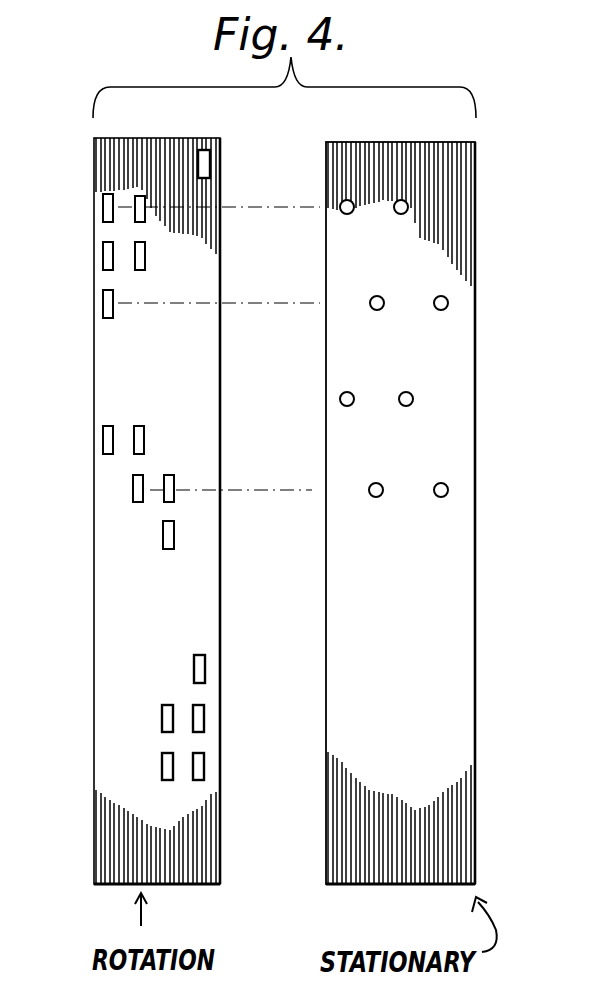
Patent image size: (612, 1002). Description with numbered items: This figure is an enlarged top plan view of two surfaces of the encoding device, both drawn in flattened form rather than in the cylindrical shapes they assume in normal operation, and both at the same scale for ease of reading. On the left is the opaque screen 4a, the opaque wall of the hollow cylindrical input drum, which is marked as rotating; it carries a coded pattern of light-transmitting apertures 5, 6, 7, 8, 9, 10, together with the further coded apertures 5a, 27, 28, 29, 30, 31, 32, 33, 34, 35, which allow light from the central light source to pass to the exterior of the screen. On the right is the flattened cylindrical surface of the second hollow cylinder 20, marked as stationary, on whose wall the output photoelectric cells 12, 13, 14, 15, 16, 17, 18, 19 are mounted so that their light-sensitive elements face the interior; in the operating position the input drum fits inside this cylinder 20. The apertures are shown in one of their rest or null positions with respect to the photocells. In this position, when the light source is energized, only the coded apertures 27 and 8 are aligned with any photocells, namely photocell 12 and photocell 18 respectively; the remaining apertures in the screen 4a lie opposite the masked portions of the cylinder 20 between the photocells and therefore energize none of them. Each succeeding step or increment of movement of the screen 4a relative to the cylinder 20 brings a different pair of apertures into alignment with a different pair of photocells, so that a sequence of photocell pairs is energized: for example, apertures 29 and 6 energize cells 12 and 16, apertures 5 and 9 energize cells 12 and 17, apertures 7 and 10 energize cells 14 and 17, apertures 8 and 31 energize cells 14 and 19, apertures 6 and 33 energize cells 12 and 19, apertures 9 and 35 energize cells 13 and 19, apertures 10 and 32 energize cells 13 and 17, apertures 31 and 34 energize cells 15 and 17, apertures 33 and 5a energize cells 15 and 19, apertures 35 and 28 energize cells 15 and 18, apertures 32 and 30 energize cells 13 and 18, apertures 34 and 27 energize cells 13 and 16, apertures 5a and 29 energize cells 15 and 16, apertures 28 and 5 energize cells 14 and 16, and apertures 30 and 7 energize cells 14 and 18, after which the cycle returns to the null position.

The opaque screen 4a is at (96, 150).
The second hollow cylinder 20 is at (466, 206).
The light-transmitting aperture 5 is at (103, 305).
The light-transmitting aperture 5a is at (208, 163).
The light-transmitting aperture 6 is at (103, 440).
The light-transmitting aperture 7 is at (147, 440).
The light-transmitting aperture 8 is at (133, 488).
The light-transmitting aperture 9 is at (176, 488).
The light-transmitting aperture 10 is at (176, 535).
The photoelectric cell 12 is at (342, 202).
The photoelectric cell 13 is at (406, 212).
The photoelectric cell 14 is at (373, 298).
The photoelectric cell 15 is at (448, 303).
The photoelectric cell 16 is at (342, 394).
The photoelectric cell 17 is at (412, 395).
The photoelectric cell 18 is at (371, 496).
The photoelectric cell 19 is at (448, 490).
The coded aperture 27 is at (103, 207).
The coded aperture 28 is at (142, 200).
The coded aperture 29 is at (103, 258).
The coded aperture 30 is at (147, 257).
The coded aperture 31 is at (206, 668).
The coded aperture 32 is at (162, 720).
The coded aperture 33 is at (205, 718).
The coded aperture 34 is at (162, 768).
The coded aperture 35 is at (205, 768).